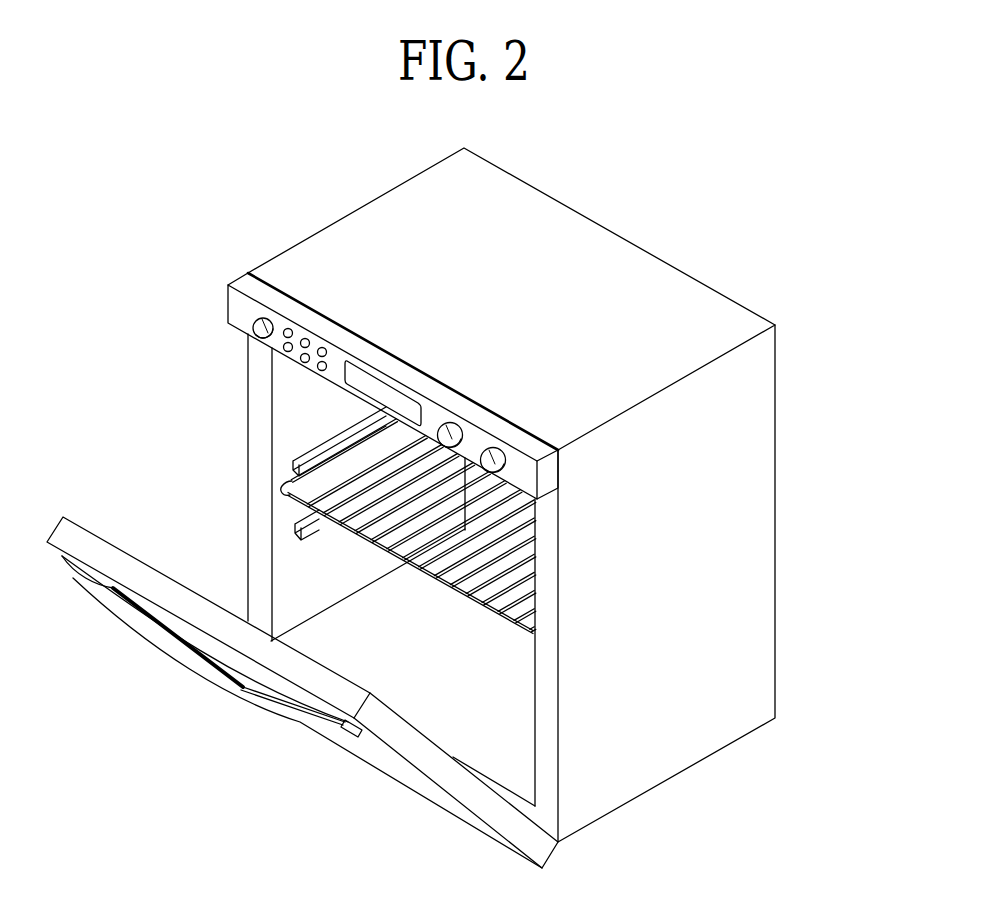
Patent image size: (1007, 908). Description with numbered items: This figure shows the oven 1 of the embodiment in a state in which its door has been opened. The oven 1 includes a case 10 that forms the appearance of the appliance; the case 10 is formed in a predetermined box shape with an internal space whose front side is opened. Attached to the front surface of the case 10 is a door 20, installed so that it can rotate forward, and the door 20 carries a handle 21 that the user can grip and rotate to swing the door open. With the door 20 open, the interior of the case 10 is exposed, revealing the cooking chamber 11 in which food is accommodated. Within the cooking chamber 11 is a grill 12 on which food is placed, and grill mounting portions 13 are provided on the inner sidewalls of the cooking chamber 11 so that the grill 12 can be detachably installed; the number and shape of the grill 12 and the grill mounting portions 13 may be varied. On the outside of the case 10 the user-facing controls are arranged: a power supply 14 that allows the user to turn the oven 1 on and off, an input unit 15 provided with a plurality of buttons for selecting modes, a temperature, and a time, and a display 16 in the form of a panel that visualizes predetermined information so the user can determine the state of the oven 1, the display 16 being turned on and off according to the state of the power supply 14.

The oven 1 is at (773, 184).
The case 10 is at (763, 584).
The cooking chamber 11 is at (325, 591).
The grill 12 is at (292, 500).
The grill mounting portions 13 is at (310, 453).
The power supply 14 is at (254, 324).
The input unit 15 is at (288, 328).
The display 16 is at (362, 378).
The door 20 is at (433, 770).
The handle 21 is at (150, 642).